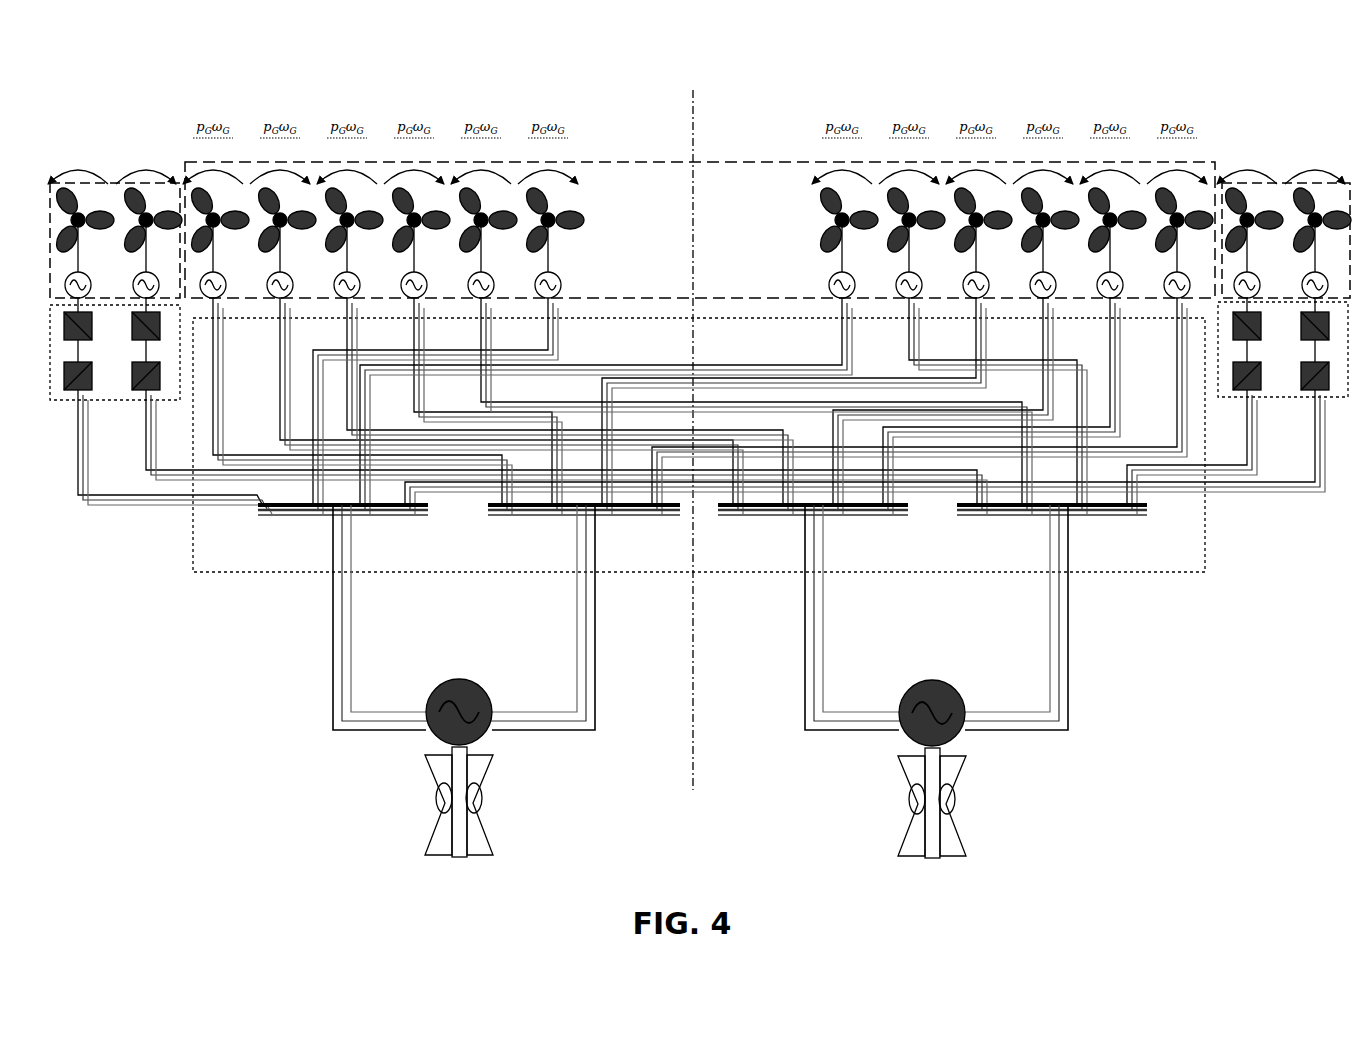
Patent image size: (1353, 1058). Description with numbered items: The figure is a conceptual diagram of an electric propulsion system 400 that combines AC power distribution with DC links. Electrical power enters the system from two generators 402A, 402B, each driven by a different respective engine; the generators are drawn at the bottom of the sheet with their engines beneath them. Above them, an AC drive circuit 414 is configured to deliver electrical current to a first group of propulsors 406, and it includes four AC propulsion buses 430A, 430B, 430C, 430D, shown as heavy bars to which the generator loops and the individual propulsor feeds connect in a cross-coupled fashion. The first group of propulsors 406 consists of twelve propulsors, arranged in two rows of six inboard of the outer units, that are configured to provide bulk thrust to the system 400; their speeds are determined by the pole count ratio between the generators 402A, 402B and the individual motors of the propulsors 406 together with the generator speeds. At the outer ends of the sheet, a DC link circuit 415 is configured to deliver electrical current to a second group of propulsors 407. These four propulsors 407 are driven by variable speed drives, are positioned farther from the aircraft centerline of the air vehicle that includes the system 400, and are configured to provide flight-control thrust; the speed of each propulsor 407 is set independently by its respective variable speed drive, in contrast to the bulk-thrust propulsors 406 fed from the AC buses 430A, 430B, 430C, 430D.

The electric propulsion system 400 is at (146, 61).
The generator 402A is at (451, 689).
The generator 402B is at (927, 690).
The first group of propulsors 406 is at (699, 208).
The second group of propulsors 407 is at (699, 224).
The AC drive circuit 414 is at (701, 435).
The DC link circuit 415 is at (699, 349).
The AC propulsion bus 430A is at (366, 521).
The AC propulsion bus 430B is at (564, 519).
The AC propulsion bus 430C is at (823, 517).
The AC propulsion bus 430D is at (1029, 519).